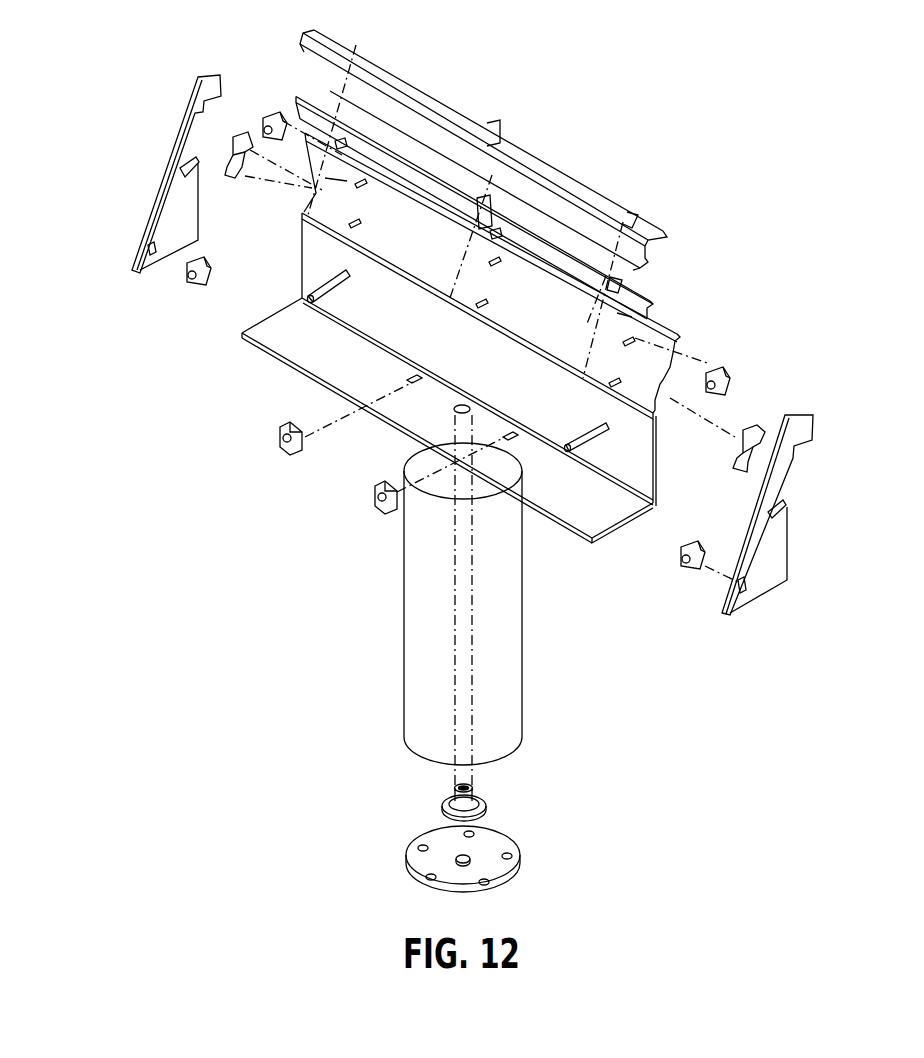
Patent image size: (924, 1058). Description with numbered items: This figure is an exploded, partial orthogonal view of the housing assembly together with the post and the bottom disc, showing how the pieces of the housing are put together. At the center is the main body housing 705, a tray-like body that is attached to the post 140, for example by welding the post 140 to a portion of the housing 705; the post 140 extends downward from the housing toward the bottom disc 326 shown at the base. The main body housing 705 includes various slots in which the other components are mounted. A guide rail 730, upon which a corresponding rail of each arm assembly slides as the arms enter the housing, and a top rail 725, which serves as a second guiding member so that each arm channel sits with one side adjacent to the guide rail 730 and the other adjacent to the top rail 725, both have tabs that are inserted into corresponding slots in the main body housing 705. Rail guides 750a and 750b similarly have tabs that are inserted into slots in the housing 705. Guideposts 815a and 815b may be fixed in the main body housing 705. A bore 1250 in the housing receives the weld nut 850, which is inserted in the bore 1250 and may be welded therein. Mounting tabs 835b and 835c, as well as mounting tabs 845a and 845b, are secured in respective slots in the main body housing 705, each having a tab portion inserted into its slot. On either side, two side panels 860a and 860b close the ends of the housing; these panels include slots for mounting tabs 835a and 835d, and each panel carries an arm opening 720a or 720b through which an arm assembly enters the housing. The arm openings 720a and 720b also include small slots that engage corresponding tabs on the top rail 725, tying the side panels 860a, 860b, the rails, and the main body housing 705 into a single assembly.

The post 140 is at (524, 668).
The base plate 326 is at (406, 850).
The main body housing 705 is at (354, 365).
The arm opening 720a is at (185, 136).
The arm opening 720b is at (788, 476).
The top rail 725 is at (548, 163).
The guide rail 730 is at (651, 299).
The rail guide 750a is at (235, 178).
The rail guide 750b is at (760, 430).
The guidepost 815a is at (326, 296).
The guidepost 815b is at (598, 427).
The mounting tab 835a is at (201, 287).
The mounting tab 835b is at (264, 115).
The mounting tab 835c is at (728, 372).
The mounting tab 835d is at (700, 548).
The mounting tab 845a is at (300, 430).
The mounting tab 845b is at (376, 490).
The weld nut 850 is at (487, 803).
The side panel 860a is at (182, 240).
The side panel 860b is at (783, 560).
The bore 1250 is at (465, 406).